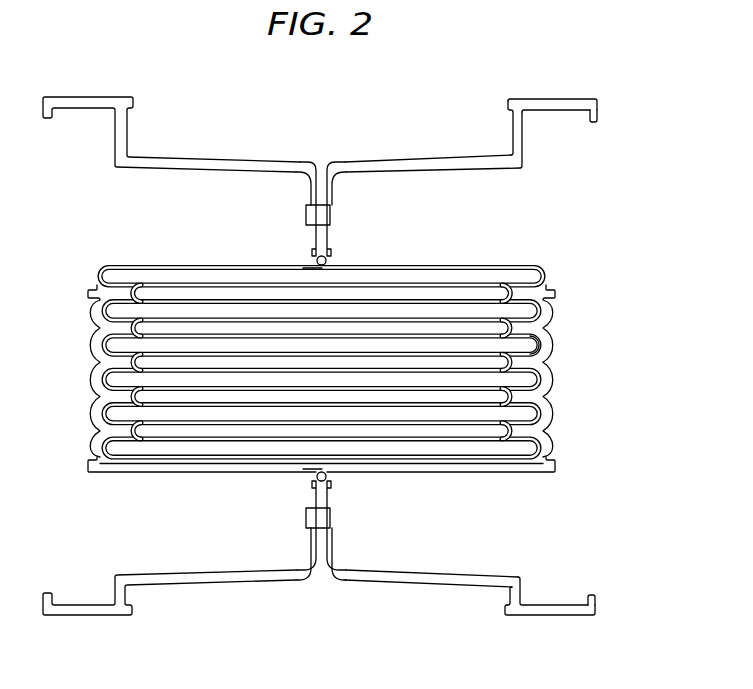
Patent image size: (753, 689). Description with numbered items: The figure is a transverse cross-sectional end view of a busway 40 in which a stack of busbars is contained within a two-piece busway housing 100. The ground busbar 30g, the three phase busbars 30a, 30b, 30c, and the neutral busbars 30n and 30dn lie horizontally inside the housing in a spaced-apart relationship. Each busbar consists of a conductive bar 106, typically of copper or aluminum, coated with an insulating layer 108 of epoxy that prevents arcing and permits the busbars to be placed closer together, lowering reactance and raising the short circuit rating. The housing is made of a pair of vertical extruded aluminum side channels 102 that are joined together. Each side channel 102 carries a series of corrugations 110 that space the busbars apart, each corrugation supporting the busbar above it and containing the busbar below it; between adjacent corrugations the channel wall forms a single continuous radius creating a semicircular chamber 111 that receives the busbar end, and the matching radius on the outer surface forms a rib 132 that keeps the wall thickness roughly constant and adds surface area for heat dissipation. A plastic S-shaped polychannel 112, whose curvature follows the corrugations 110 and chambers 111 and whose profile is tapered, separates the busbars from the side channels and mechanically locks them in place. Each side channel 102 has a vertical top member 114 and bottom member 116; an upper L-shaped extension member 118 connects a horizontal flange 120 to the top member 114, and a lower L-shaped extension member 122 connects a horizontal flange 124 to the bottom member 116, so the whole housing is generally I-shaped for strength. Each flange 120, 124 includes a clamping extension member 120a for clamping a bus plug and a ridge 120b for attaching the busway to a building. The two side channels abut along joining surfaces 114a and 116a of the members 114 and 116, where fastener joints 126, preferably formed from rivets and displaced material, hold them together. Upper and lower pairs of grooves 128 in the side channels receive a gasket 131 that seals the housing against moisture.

The busway 40 is at (343, 339).
The busway housing 100 is at (320, 336).
The side channel 102 is at (470, 265).
The ground busbar 30g is at (104, 286).
The phase busbar 30a is at (107, 319).
The phase busbar 30b is at (109, 352).
The phase busbar 30c is at (109, 385).
The neutral busbar 30n is at (109, 419).
The neutral busbar 30dn is at (109, 453).
The conductive bar 106 is at (402, 447).
The insulating layer 108 is at (470, 462).
The corrugation 110 is at (544, 346).
The semicircular chamber 111 is at (550, 312).
The S-shaped polychannel 112 is at (550, 384).
The rib 132 is at (550, 420).
The top member 114 is at (330, 180).
The joining surface 114a is at (312, 180).
The bottom member 116 is at (330, 503).
The joining surface 116a is at (312, 535).
The upper L-shaped extension member 118 is at (524, 167).
The horizontal flange 120 is at (566, 99).
The clamping extension member 120a is at (514, 100).
The ridge 120b is at (594, 123).
The lower L-shaped extension member 122 is at (389, 583).
The horizontal flange 124 is at (548, 617).
The fastener joint 126 is at (306, 216).
The groove 128 is at (329, 258).
The gasket 131 is at (307, 270).